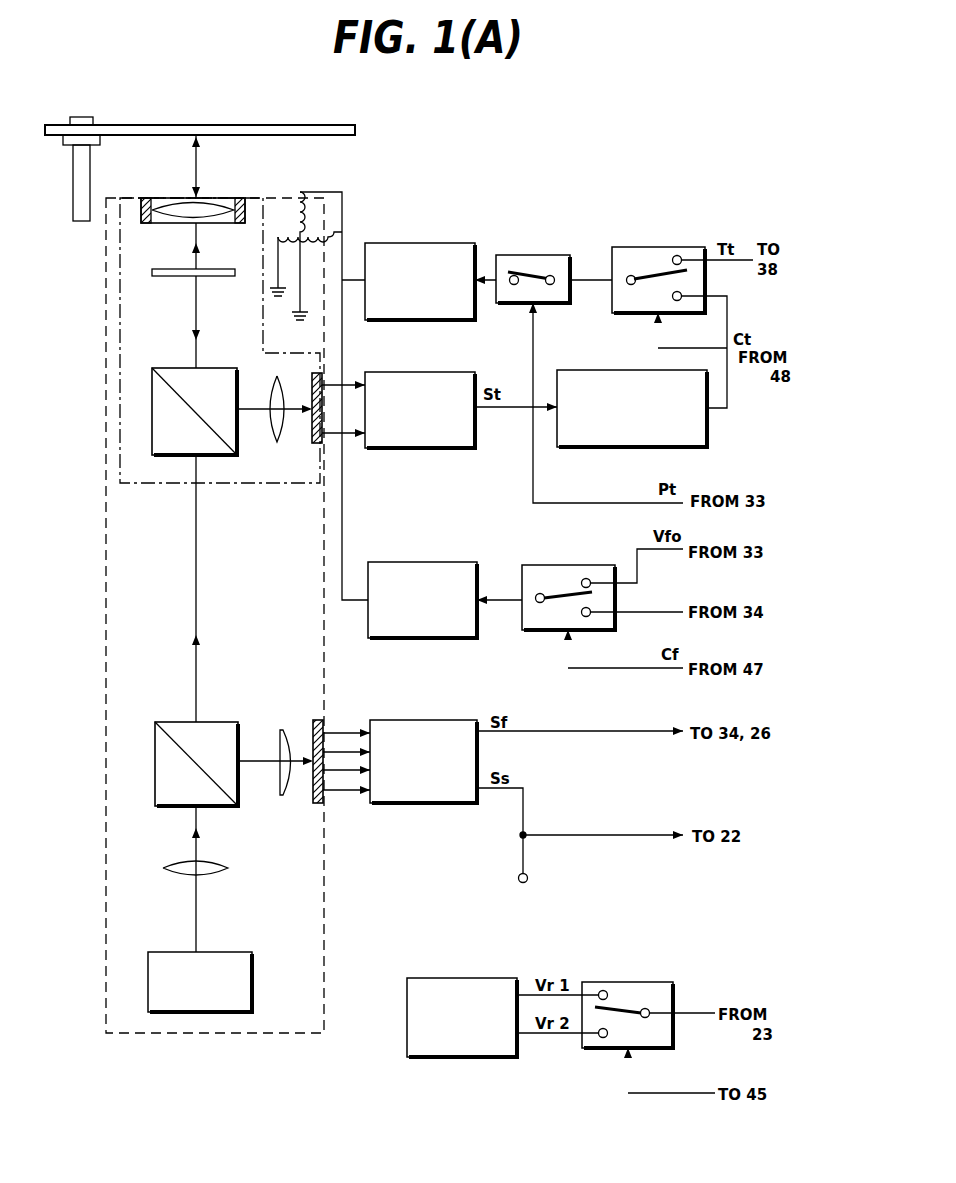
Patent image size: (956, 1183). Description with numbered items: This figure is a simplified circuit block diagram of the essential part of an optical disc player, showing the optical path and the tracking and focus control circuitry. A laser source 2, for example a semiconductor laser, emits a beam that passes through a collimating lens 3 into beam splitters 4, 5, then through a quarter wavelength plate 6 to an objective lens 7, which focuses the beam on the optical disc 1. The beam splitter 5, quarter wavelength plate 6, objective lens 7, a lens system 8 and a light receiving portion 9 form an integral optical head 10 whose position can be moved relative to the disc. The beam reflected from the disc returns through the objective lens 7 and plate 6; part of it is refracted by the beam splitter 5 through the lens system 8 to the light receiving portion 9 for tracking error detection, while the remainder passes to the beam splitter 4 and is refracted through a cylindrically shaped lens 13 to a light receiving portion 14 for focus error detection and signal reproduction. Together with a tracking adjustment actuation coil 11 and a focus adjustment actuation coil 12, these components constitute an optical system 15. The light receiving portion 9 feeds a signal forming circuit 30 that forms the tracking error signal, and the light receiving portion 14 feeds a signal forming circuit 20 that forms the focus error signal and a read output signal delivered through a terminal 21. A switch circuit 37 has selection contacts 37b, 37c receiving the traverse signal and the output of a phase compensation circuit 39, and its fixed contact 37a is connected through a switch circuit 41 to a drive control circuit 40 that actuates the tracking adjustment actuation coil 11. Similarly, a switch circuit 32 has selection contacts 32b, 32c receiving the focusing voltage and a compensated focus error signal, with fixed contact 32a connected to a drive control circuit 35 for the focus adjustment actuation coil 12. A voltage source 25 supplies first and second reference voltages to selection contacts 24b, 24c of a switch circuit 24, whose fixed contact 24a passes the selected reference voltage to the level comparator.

The optical disc 1 is at (302, 125).
The laser source 2 is at (238, 952).
The collimating lens 3 is at (168, 872).
The beam splitter 4 is at (166, 722).
The beam splitter 5 is at (167, 370).
The quarter wavelength plate 6 is at (157, 277).
The objective lens 7 is at (164, 225).
The lens system 8 is at (273, 443).
The light receiving portion 9 is at (314, 444).
The optical head 10 is at (266, 485).
The tracking adjustment actuation coil 11 is at (278, 238).
The focus adjustment actuation coil 12 is at (300, 192).
The cylindrically shaped lens 13 is at (280, 736).
The light receiving portion 14 is at (313, 722).
The optical system 15 is at (325, 920).
The signal forming circuit 20 is at (458, 720).
The terminal 21 is at (520, 882).
The switch circuit 24 is at (636, 1009).
The fixed contact 24a is at (646, 1008).
The selection contact 24b is at (603, 990).
The selection contact 24c is at (603, 1038).
The voltage source 25 is at (500, 978).
The signal forming circuit 30 is at (456, 372).
The switch circuit 32 is at (587, 595).
The fixed contact 32a is at (540, 603).
The selection contact 32b is at (590, 587).
The selection contact 32c is at (588, 617).
The drive control circuit 35 is at (458, 562).
The switch circuit 37 is at (674, 275).
The fixed contact 37a is at (631, 275).
The selection contact 37b is at (681, 257).
The selection contact 37c is at (680, 300).
The phase compensation circuit 39 is at (580, 370).
The drive control circuit 40 is at (456, 243).
The switch circuit 41 is at (557, 255).